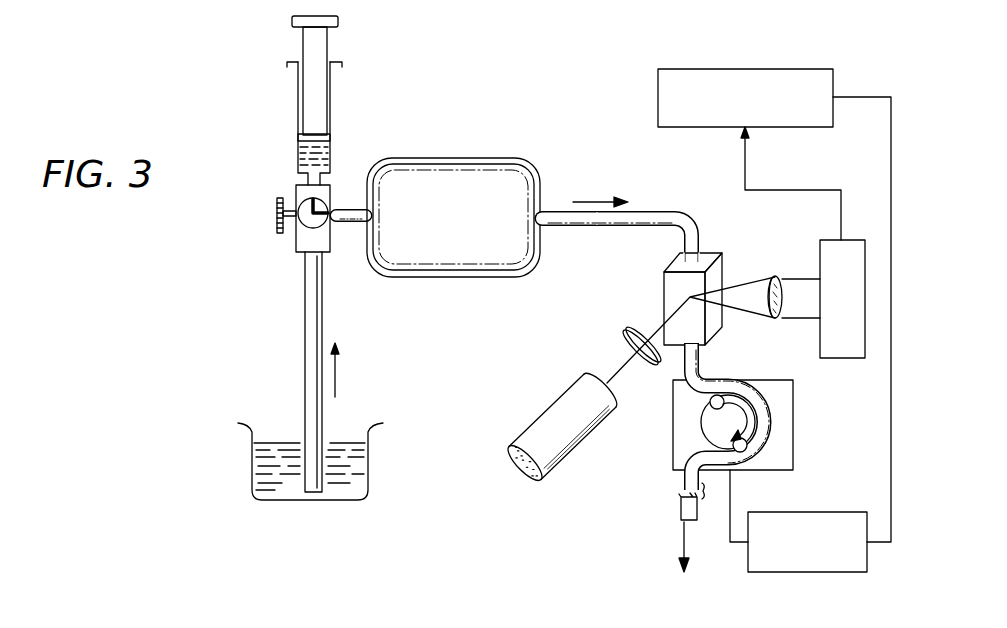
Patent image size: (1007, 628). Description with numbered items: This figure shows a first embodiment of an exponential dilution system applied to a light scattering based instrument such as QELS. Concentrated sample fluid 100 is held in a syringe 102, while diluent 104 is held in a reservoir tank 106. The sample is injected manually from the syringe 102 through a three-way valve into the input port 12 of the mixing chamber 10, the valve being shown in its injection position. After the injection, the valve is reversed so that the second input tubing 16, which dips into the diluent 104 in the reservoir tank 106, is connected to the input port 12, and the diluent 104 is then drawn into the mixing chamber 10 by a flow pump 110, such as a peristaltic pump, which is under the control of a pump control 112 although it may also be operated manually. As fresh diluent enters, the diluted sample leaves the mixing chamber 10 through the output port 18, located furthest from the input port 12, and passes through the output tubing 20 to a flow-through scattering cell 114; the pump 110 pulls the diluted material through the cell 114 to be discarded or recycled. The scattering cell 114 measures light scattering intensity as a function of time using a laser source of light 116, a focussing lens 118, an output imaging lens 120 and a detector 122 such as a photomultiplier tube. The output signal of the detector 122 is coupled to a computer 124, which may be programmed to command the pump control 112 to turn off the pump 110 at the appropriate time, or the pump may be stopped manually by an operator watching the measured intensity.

The mixing chamber 10 is at (480, 185).
The input port 12 is at (372, 212).
The second input tubing 16 is at (318, 315).
The output port 18 is at (527, 195).
The output tubing 20 is at (647, 213).
The concentrated sample fluid 100 is at (318, 157).
The syringe 102 is at (332, 92).
The diluent 104 is at (258, 447).
The reservoir tank 106 is at (368, 470).
The flow pump 110 is at (793, 440).
The pump control 112 is at (795, 512).
The flow through scattering cell 114 is at (723, 260).
The laser source of light 116 is at (560, 393).
The focussing lens 118 is at (632, 326).
The output imaging lens 120 is at (772, 277).
The detector 122 is at (826, 358).
The computer 124 is at (728, 68).